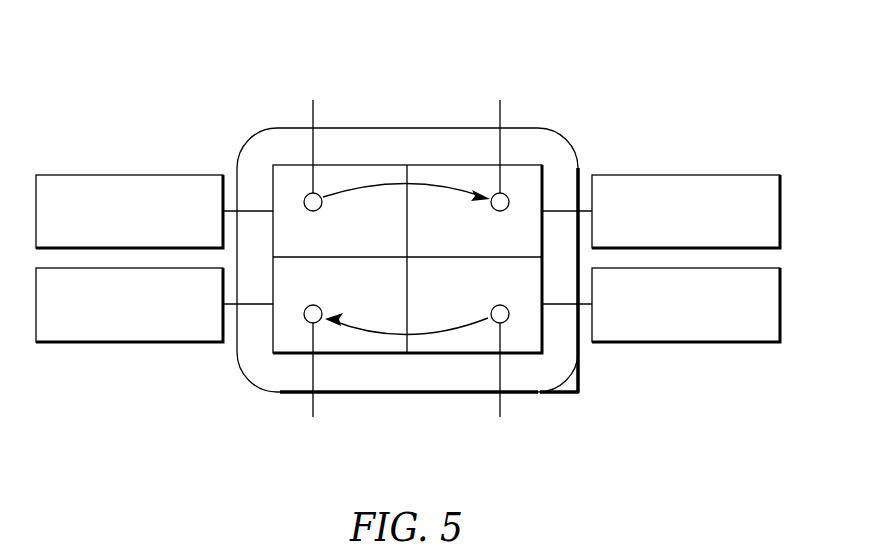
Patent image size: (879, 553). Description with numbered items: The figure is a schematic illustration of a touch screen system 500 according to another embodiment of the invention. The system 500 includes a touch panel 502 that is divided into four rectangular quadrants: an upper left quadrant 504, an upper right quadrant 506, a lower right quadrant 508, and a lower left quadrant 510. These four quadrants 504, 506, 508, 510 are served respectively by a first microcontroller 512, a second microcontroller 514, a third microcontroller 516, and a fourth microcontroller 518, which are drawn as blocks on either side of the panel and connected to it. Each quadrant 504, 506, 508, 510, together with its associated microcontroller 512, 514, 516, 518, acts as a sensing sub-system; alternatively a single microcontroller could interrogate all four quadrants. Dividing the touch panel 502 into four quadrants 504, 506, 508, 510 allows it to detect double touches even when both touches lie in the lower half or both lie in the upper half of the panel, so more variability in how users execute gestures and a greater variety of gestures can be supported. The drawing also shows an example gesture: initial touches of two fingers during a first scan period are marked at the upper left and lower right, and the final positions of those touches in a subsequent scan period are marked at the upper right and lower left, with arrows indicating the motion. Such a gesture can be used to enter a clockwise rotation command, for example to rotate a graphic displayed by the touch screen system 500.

The touch screen system 500 is at (743, 31).
The touch panel 502 is at (380, 164).
The upper left quadrant 504 is at (292, 178).
The upper right quadrant 506 is at (531, 178).
The lower right quadrant 508 is at (478, 342).
The lower left quadrant 510 is at (290, 342).
The first microcontroller 512 is at (130, 174).
The second microcontroller 514 is at (687, 174).
The third microcontroller 516 is at (686, 344).
The fourth microcontroller 518 is at (130, 344).